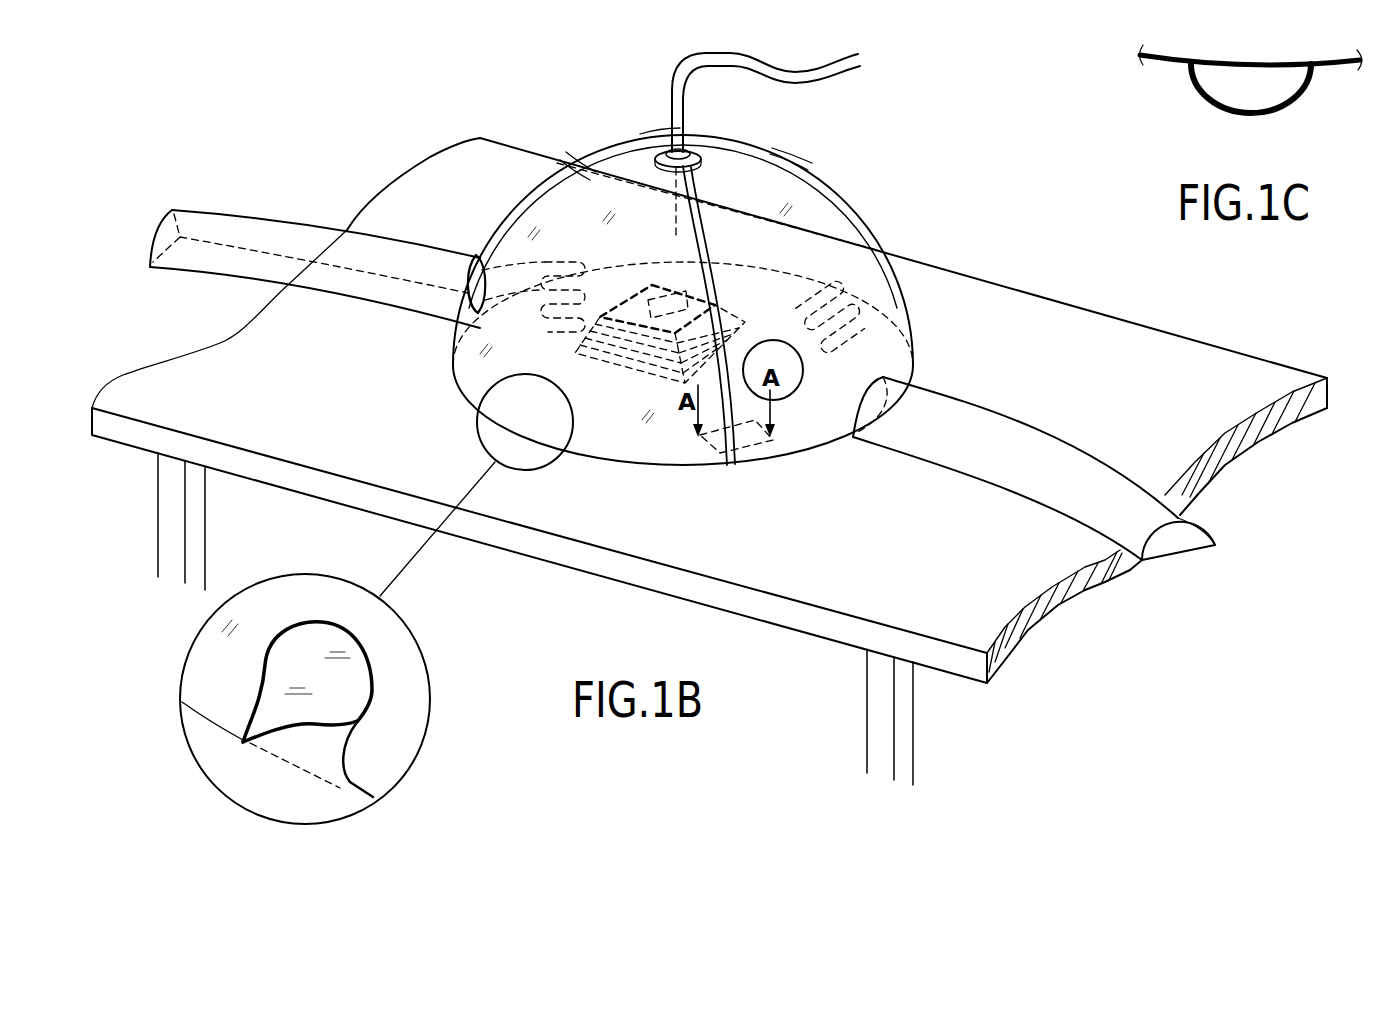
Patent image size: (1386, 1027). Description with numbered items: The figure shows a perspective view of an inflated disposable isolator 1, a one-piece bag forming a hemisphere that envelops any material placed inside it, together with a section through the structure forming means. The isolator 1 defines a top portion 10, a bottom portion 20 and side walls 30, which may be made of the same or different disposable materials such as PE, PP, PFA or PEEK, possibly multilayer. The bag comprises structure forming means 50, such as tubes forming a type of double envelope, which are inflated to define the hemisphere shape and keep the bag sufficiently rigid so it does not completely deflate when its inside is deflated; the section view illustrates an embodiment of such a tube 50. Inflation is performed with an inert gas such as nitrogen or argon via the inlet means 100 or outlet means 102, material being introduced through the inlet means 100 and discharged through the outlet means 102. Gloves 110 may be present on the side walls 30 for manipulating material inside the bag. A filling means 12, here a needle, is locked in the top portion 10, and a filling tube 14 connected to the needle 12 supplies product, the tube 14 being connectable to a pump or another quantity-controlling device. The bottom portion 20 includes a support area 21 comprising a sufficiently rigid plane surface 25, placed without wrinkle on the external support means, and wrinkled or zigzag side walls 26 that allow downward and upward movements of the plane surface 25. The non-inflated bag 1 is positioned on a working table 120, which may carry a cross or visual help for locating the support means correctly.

In FIG. 1B, the disposable isolator 1 is at (572, 105).
In FIG. 1B, the top portion 10 is at (726, 178).
In FIG. 1B, the filling means 12 is at (698, 140).
In FIG. 1B, the filling tube 14 is at (797, 73).
In FIG. 1B, the bottom portion 20 is at (886, 347).
In FIG. 1B, the support area 21 is at (663, 390).
In FIG. 1B, the plane surface 25 is at (653, 284).
In FIG. 1B, the wrinkled or zigzag side walls 26 is at (640, 380).
In FIG. 1B, the side walls 30 is at (840, 230).
In FIG. 1B, the structure forming means 50 is at (655, 128).
In FIG. 1C, the structure forming means 50 is at (1247, 114).
In FIG. 1B, the inlet means 100 is at (286, 226).
In FIG. 1B, the outlet means 102 is at (1030, 424).
In FIG. 1B, the gloves 110 is at (515, 240).
In FIG. 1B, the working table 120 is at (295, 409).